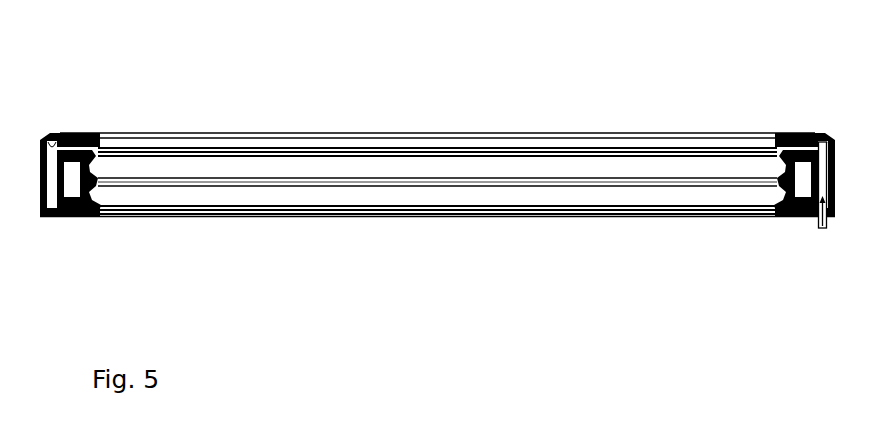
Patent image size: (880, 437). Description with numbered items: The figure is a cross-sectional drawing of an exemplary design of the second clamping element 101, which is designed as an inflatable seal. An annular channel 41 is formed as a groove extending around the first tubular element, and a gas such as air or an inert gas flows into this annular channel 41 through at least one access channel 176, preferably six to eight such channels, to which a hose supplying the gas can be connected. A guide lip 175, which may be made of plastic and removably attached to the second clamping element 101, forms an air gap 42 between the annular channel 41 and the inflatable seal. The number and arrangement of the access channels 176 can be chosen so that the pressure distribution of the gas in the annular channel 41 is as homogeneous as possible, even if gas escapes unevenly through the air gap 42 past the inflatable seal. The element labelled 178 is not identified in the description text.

The annular channel 41 is at (66, 131).
The air gap 42 is at (797, 141).
The second clamping element 101 is at (101, 196).
The guide lip 175 is at (272, 133).
The access channel 176 is at (54, 218).
The locking pin 178 is at (812, 222).